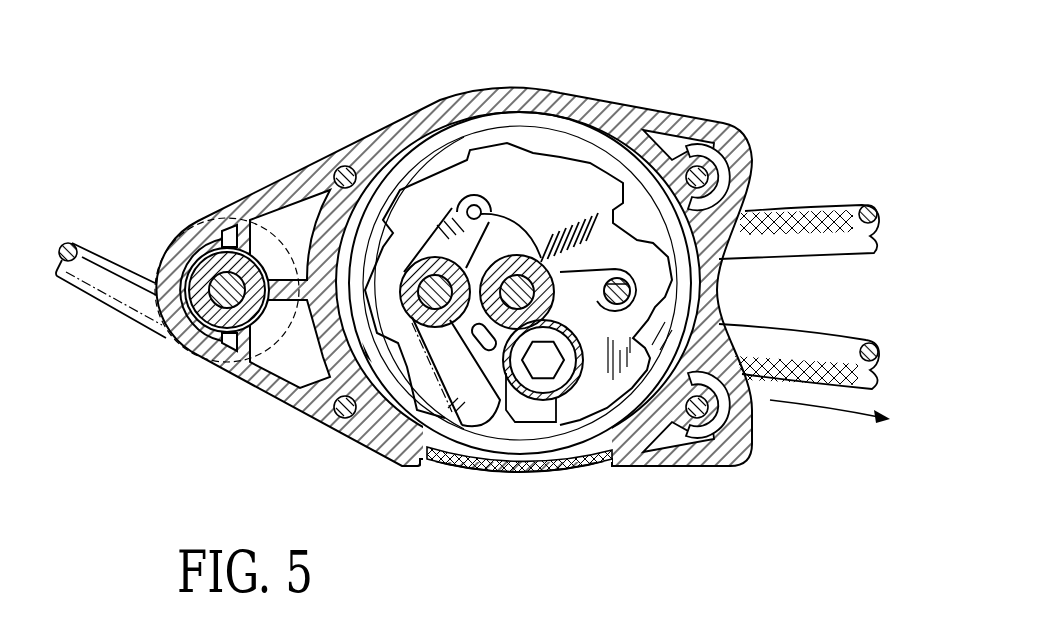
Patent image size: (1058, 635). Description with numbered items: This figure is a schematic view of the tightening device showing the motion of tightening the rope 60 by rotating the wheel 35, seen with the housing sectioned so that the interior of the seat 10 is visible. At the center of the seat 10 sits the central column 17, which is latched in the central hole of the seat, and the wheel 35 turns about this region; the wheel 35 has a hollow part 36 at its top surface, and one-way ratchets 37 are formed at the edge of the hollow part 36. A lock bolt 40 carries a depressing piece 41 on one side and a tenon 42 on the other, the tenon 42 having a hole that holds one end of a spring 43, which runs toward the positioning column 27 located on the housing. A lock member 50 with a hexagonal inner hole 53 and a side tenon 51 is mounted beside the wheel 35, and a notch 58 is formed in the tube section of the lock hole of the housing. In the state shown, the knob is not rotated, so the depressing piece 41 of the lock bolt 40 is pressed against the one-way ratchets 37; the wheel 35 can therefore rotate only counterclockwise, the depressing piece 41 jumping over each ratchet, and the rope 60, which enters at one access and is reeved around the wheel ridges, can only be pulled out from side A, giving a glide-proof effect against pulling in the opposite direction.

The seat 10 is at (472, 102).
The central column 17 is at (515, 280).
The positioning column 27 is at (631, 294).
The wheel 35 is at (563, 153).
The hollow part 36 is at (510, 157).
The one-way ratchets 37 is at (688, 122).
The lock bolt 40 is at (418, 262).
The depressing piece 41 is at (377, 440).
The tenon 42 is at (458, 205).
The spring 43 is at (572, 222).
The lock member 50 is at (576, 368).
The tenon 51 is at (485, 350).
The hexagonal inner hole 53 is at (562, 375).
The notch 58 is at (520, 437).
The rope 60 is at (822, 205).
The side A is at (885, 358).